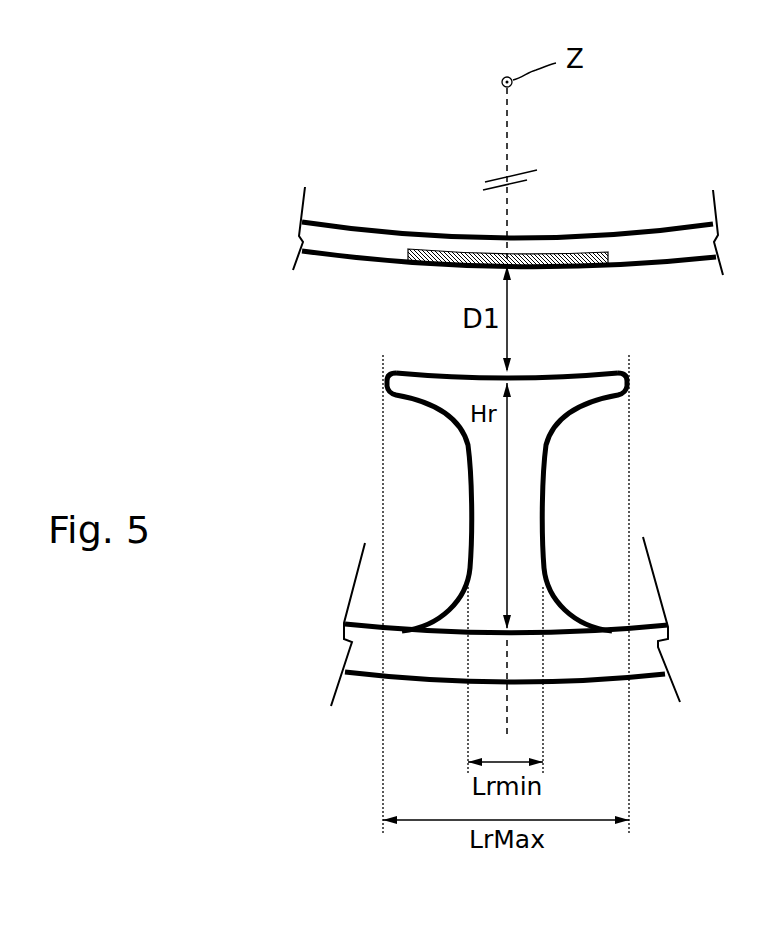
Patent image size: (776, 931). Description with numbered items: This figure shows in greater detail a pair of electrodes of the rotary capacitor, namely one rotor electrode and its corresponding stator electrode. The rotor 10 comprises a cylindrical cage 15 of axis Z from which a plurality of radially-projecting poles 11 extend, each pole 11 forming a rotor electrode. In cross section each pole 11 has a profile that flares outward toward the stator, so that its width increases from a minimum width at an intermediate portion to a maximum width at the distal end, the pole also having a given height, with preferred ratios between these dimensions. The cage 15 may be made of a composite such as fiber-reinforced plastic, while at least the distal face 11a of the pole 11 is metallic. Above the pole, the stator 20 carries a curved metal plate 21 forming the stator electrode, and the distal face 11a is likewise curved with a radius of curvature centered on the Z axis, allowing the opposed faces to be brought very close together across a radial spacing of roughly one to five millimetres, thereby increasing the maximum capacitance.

The rotor 10 is at (496, 543).
The pole 11 is at (527, 473).
The distal face 11a is at (548, 380).
The cylindrical cage 15 is at (568, 664).
The stator 20 is at (643, 248).
The stator electrode 21 is at (432, 249).